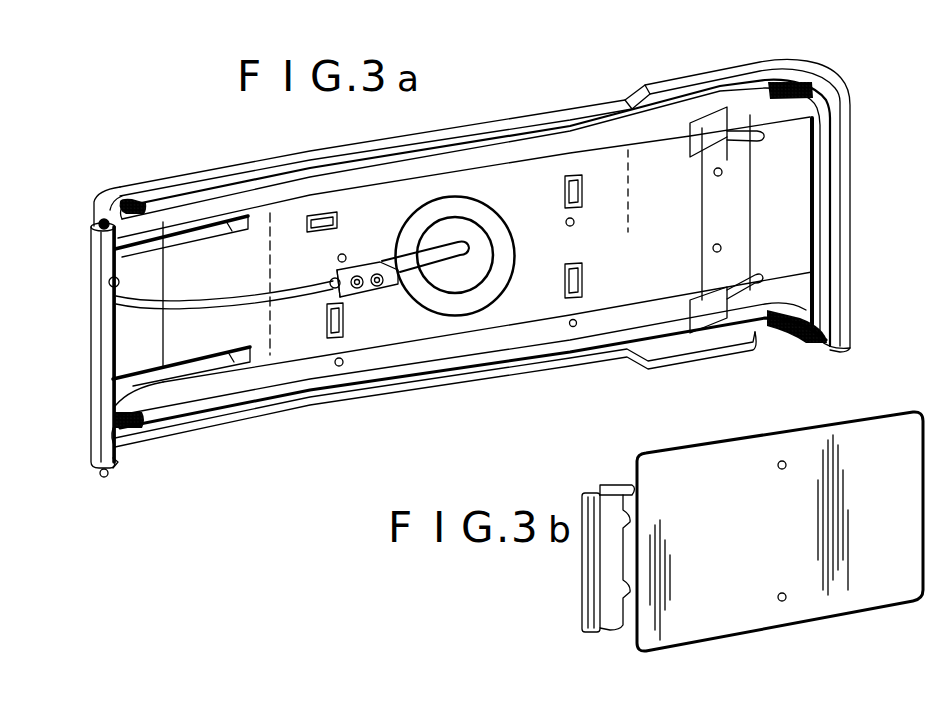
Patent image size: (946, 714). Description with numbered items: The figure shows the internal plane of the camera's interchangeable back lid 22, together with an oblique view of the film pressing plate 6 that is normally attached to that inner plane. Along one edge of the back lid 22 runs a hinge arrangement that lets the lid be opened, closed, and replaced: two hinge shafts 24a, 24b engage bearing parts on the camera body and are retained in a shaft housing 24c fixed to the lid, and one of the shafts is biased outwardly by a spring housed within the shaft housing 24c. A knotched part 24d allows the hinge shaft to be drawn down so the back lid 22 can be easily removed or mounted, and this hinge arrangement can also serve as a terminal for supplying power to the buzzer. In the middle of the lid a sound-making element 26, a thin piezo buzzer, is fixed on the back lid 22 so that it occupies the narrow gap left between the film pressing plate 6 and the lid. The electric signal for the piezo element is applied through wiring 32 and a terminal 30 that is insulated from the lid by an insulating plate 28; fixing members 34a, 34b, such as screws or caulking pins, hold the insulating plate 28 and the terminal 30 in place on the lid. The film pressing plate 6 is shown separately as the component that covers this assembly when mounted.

In FIG. 3A, the back lid 22 is at (685, 80).
In FIG. 3A, the sound-making element 26 is at (450, 315).
In FIG. 3A, the wiring 32 is at (283, 222).
In FIG. 3A, the insulating plate 28 is at (355, 262).
In FIG. 3A, the terminal 30 is at (362, 265).
In FIG. 3A, the fixing member 34a is at (355, 289).
In FIG. 3A, the fixing member 34b is at (384, 288).
In FIG. 3A, the hinge shaft 24a is at (102, 219).
In FIG. 3A, the hinge shaft 24b is at (107, 478).
In FIG. 3A, the shaft housing 24c is at (96, 402).
In FIG. 3A, the knotched part 24d is at (112, 284).
In FIG. 3B, the film pressing plate 6 is at (865, 428).